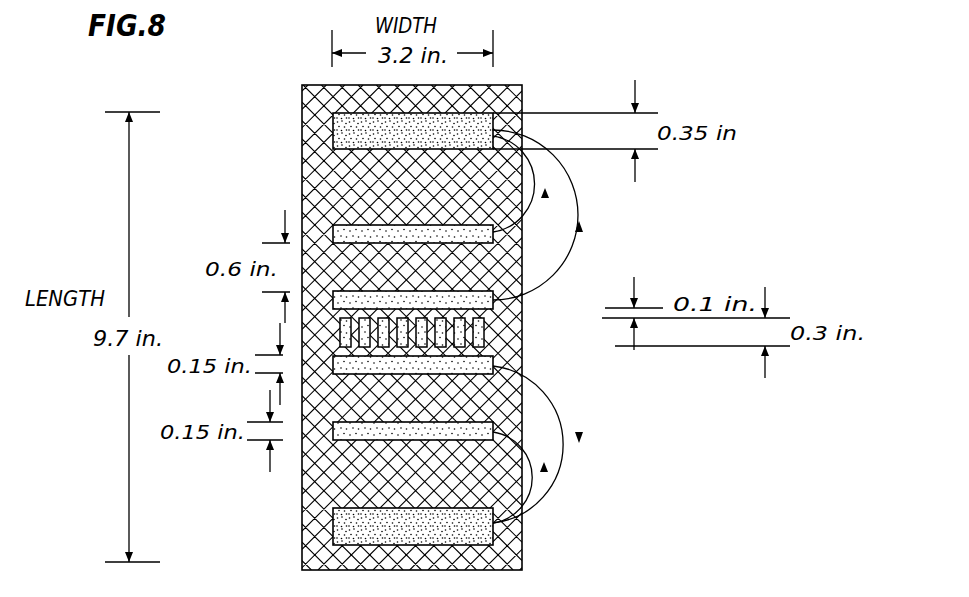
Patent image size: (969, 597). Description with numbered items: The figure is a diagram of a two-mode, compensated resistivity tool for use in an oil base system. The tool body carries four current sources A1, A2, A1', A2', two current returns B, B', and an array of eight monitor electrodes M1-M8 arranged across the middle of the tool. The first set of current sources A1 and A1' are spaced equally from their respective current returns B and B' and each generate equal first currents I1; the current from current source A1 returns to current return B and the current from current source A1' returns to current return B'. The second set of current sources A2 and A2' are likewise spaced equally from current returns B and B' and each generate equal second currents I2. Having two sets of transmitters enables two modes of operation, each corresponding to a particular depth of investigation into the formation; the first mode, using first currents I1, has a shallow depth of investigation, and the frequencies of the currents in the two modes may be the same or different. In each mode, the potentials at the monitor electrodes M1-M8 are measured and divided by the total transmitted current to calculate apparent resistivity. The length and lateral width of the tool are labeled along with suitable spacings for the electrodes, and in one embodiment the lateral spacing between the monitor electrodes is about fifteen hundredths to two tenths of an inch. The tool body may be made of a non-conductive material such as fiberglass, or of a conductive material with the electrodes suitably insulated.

The current return B is at (361, 131).
The current source A2 is at (361, 213).
The current source A1 is at (406, 281).
The monitor electrodes M1-M8 is at (488, 333).
The current source A1' is at (406, 385).
The current source A2' is at (361, 465).
The current return B' is at (361, 529).
The first current I1 is at (543, 326).
The second current I2 is at (521, 329).